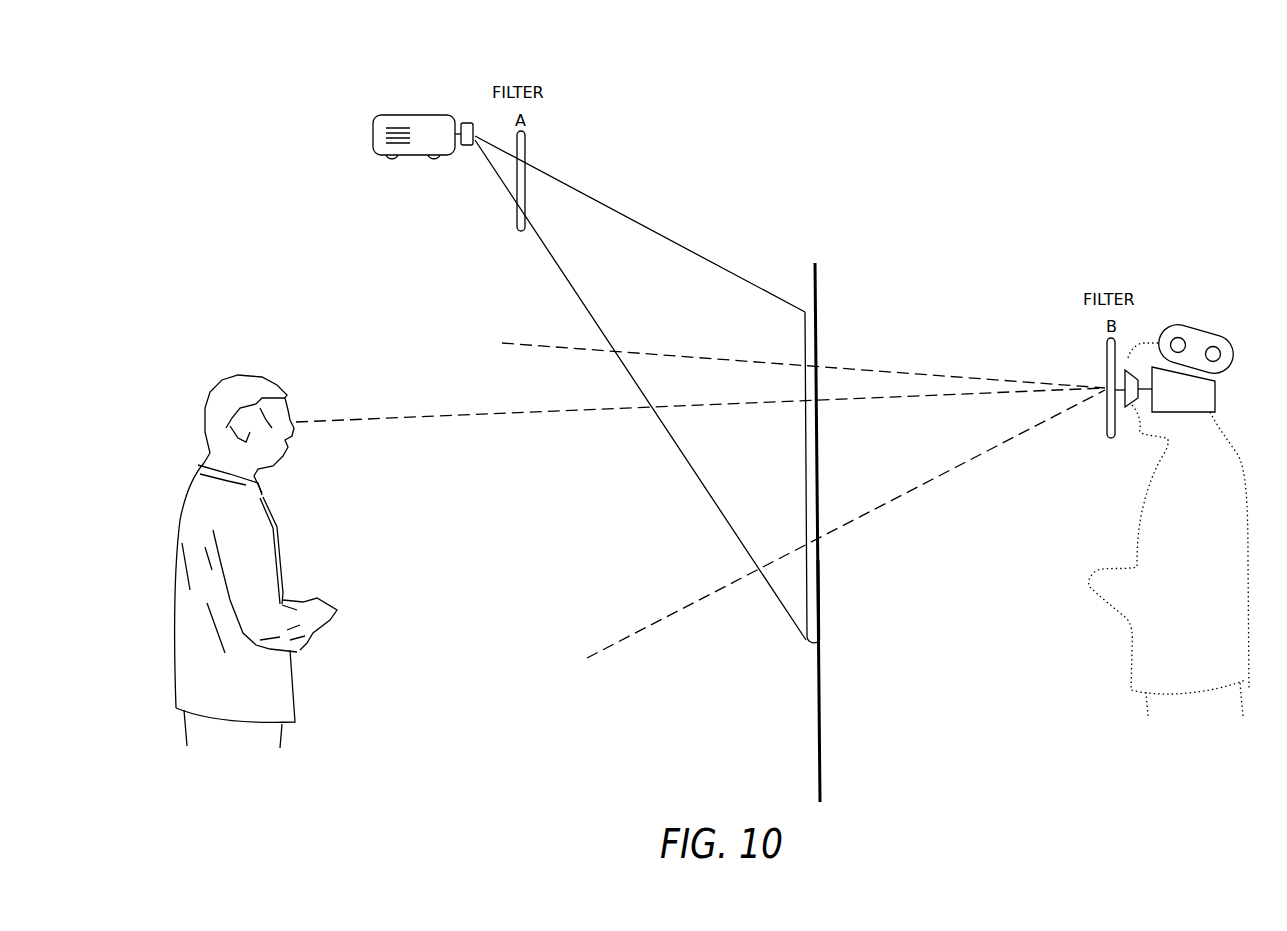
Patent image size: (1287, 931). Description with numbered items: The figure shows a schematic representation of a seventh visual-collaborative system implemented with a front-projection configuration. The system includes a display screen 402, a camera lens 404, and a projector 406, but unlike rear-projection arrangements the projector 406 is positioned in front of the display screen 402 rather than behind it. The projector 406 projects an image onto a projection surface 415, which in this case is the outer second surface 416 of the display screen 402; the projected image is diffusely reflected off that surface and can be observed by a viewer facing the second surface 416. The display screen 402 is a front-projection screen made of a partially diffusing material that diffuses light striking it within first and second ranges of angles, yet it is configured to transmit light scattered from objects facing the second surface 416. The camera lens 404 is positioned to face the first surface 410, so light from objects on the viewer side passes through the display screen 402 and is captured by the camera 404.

The display screen 402 is at (822, 580).
The camera lens 404 is at (1200, 328).
The projector 406 is at (414, 112).
The first surface 410 is at (822, 456).
The projection surface 415 is at (804, 338).
The second surface 416 is at (804, 478).